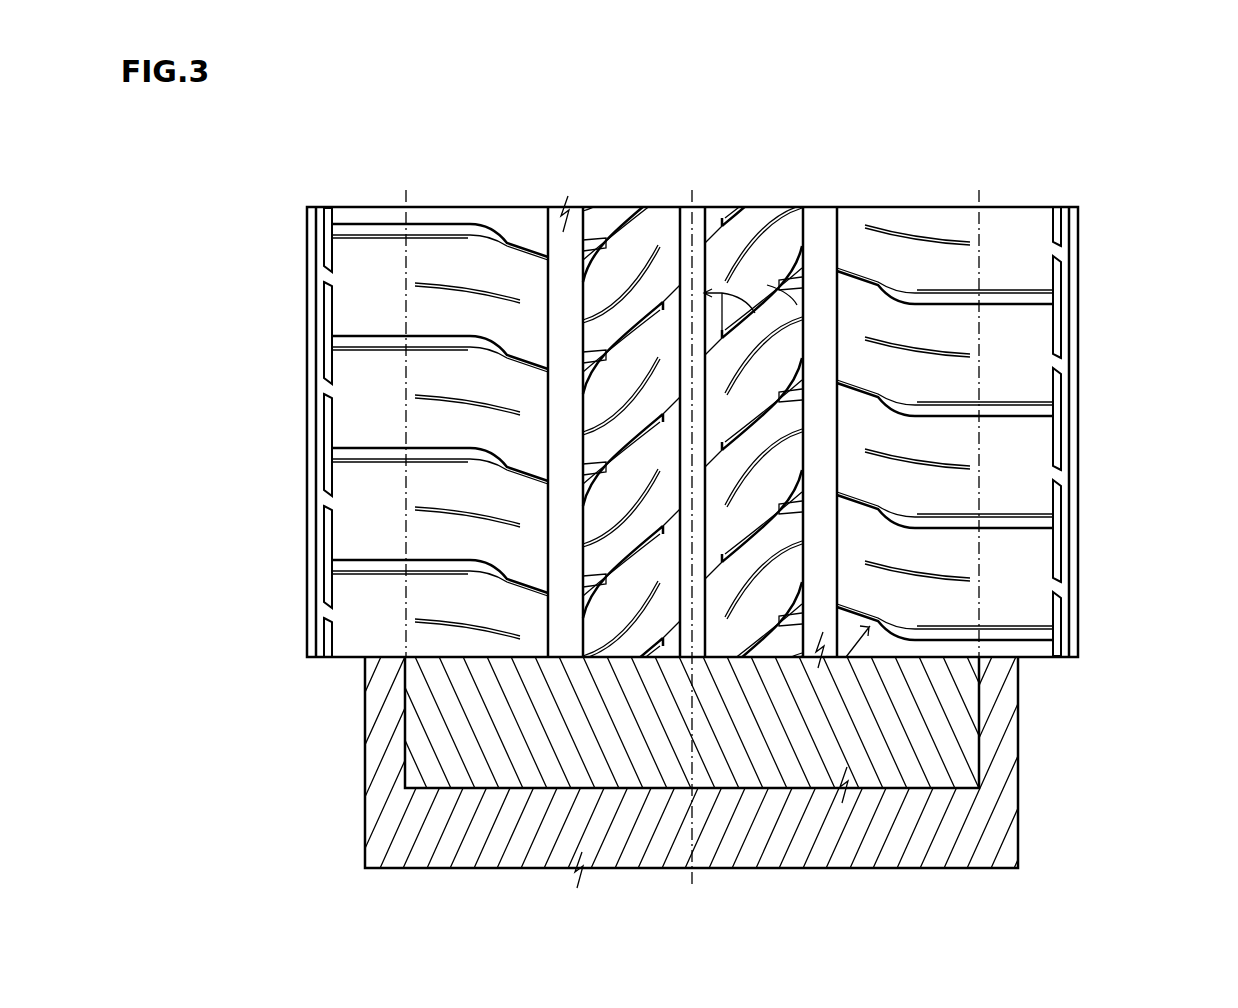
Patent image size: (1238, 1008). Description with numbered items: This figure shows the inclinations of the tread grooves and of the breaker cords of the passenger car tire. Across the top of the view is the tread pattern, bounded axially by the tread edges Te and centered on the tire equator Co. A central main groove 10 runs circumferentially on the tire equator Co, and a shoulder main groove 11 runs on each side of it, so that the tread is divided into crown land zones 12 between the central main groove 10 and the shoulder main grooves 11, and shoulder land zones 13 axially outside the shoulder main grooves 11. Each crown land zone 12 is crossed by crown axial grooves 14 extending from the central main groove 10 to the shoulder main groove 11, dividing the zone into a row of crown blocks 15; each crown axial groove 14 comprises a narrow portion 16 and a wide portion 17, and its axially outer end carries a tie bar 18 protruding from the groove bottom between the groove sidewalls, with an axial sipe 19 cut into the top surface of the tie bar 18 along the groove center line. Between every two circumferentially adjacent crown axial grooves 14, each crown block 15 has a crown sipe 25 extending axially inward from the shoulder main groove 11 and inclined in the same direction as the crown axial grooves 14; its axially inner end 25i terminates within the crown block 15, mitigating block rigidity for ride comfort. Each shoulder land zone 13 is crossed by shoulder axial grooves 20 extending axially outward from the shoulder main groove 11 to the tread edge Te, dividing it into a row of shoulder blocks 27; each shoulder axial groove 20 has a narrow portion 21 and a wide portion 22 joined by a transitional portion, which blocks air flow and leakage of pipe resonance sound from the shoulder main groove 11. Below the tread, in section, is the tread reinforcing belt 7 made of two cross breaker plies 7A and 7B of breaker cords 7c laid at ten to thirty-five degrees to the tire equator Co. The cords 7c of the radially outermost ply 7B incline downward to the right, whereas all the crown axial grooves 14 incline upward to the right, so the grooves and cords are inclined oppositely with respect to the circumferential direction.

The tread reinforcing belt 7 is at (1150, 730).
The breaker ply 7A is at (1018, 827).
The breaker ply 7B is at (980, 758).
The breaker cords 7c is at (433, 845).
The central main groove 10 is at (701, 222).
The shoulder main groove 11 is at (548, 213).
The crown land zone 12 is at (605, 260).
The shoulder land zone 13 is at (447, 213).
The crown axial groove 14 is at (605, 124).
The crown block 15 is at (597, 398).
The narrow portion 16 is at (668, 280).
The wide portion 17 is at (642, 312).
The tie bar 18 is at (800, 368).
The axial sipe 19 is at (805, 397).
The shoulder axial groove 20 is at (963, 407).
The narrow portion 21 is at (837, 497).
The wide portion 22 is at (925, 510).
The crown sipe 25 is at (775, 463).
The axially inner end 25i is at (607, 463).
The shoulder block 27 is at (430, 262).
The tread edge Te is at (979, 197).
The tire equator Co is at (694, 521).